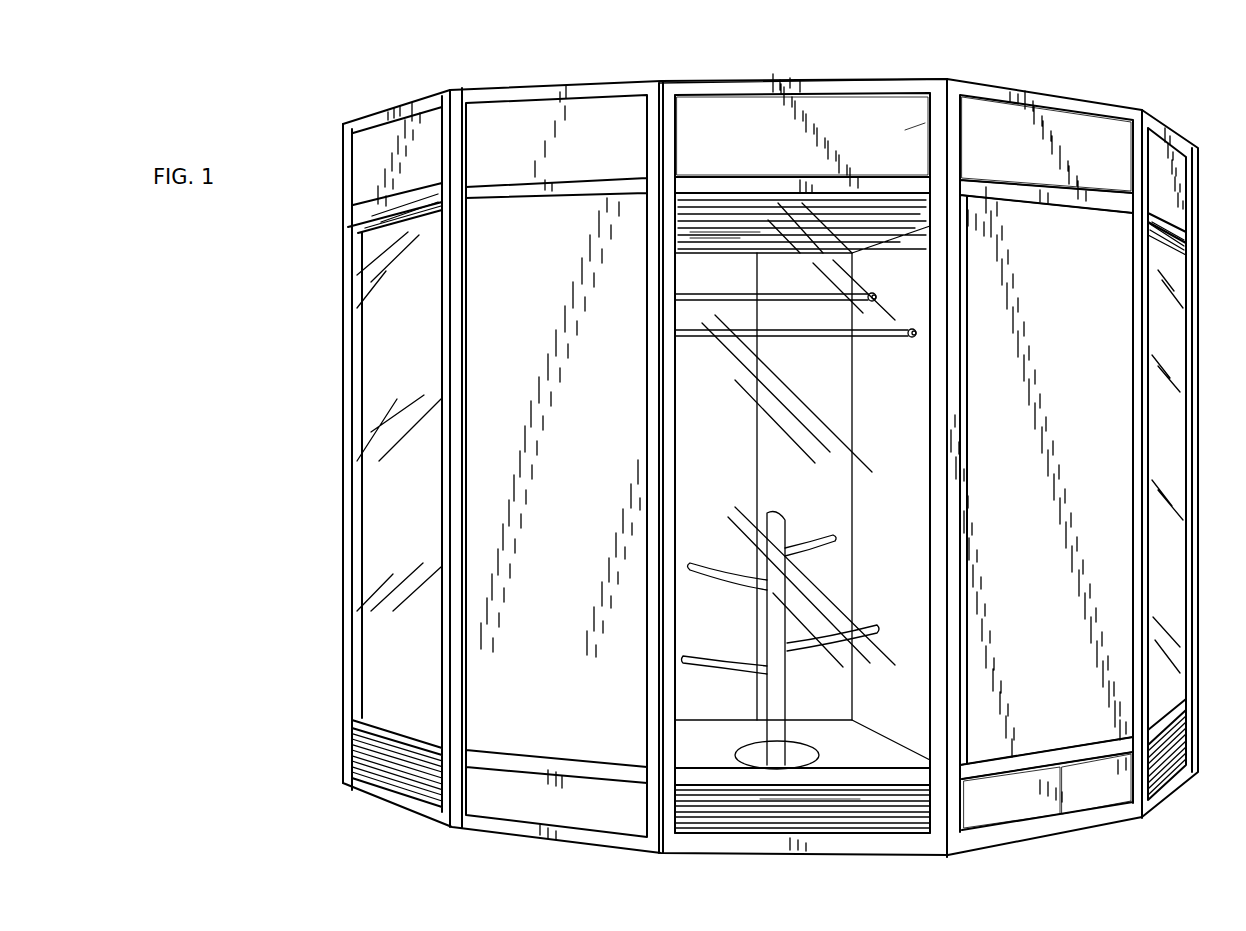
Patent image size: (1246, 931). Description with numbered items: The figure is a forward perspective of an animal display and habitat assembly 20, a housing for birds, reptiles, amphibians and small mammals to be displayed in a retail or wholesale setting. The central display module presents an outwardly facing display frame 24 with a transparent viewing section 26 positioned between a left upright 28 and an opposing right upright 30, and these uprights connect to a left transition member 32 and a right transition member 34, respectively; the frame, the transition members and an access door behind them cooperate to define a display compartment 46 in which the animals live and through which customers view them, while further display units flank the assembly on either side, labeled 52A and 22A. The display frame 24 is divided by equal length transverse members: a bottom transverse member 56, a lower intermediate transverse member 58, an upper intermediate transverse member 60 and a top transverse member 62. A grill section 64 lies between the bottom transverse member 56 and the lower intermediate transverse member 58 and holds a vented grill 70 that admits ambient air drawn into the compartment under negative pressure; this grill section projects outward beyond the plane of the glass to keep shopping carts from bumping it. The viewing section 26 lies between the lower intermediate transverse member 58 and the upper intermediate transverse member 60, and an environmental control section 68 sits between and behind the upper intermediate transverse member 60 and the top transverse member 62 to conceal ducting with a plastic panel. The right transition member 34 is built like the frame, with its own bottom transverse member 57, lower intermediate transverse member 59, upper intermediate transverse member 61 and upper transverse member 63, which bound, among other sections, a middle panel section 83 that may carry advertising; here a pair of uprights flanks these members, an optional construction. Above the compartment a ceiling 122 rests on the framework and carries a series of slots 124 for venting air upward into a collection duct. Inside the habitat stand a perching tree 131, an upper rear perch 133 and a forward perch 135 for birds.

The animal display and habitat assembly 20 is at (1158, 108).
The right end panel 22A is at (1182, 125).
The display frame 24 is at (853, 462).
The viewing section 26 is at (726, 457).
The left upright 28 is at (668, 383).
The right upright 30 is at (935, 354).
The left transition member 32 is at (483, 81).
The right transition member 34 is at (1020, 457).
The display compartment 46 is at (900, 461).
The left end panel 52A is at (372, 112).
The bottom transverse member 56 is at (898, 843).
The bottom transverse member 57 is at (1090, 811).
The lower intermediate transverse member 58 is at (705, 777).
The lower intermediate transverse member 59 is at (1035, 755).
The upper intermediate transverse member 60 is at (712, 177).
The upper intermediate transverse member 61 is at (1102, 195).
The top transverse member 62 is at (706, 96).
The upper transverse member 63 is at (1015, 104).
The grill section 64 is at (863, 797).
The environmental control section 68 is at (905, 130).
The vented grill 70 is at (840, 796).
The middle panel section 83 is at (1082, 252).
The ceiling 122 is at (888, 235).
The slots 124 is at (700, 237).
The perching tree 131 is at (770, 611).
The upper rear perch 133 is at (767, 297).
The forward perch 135 is at (783, 338).